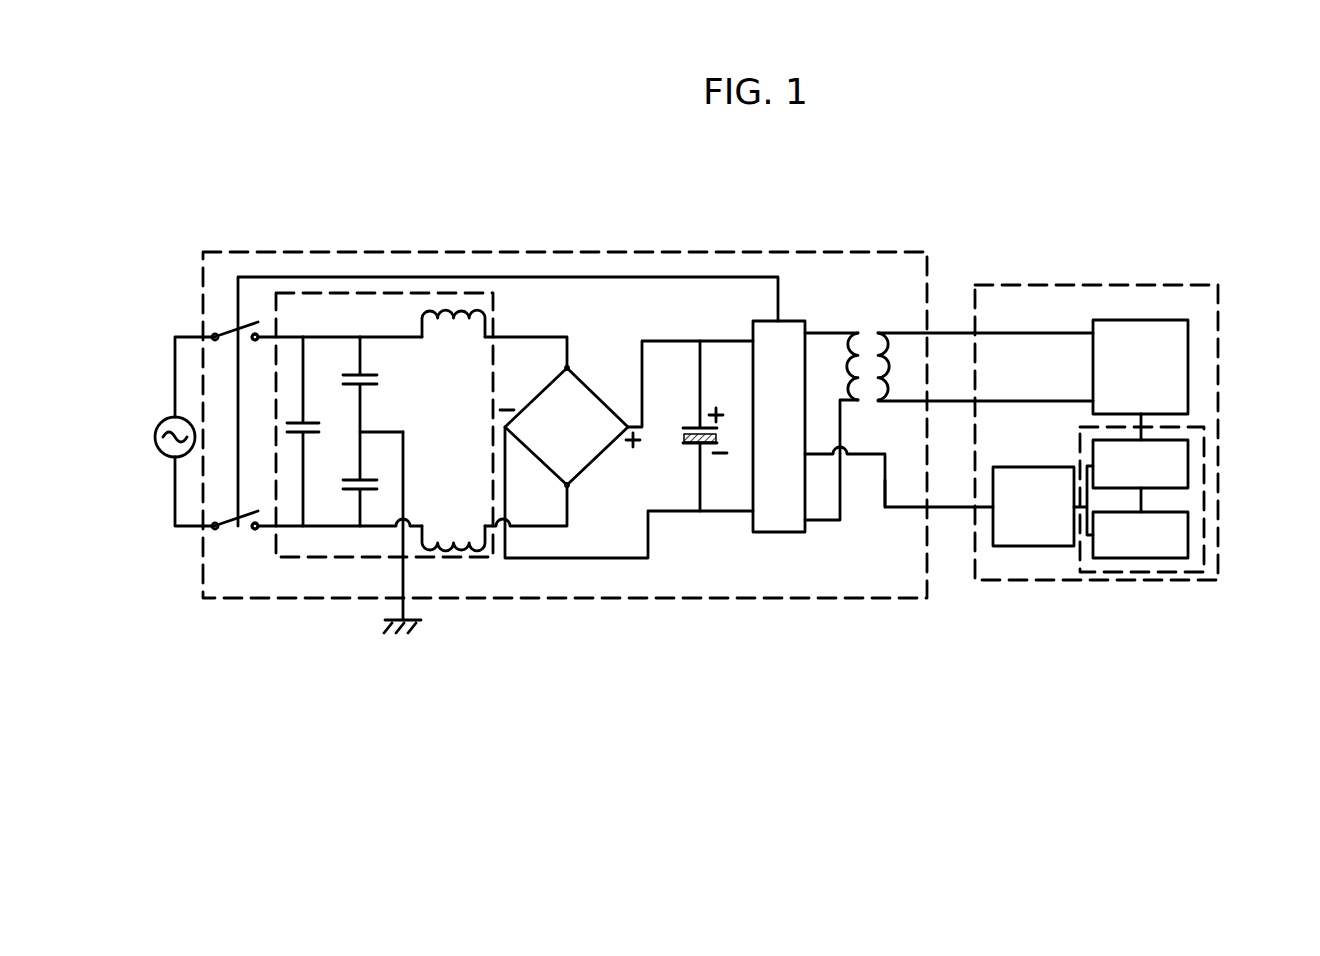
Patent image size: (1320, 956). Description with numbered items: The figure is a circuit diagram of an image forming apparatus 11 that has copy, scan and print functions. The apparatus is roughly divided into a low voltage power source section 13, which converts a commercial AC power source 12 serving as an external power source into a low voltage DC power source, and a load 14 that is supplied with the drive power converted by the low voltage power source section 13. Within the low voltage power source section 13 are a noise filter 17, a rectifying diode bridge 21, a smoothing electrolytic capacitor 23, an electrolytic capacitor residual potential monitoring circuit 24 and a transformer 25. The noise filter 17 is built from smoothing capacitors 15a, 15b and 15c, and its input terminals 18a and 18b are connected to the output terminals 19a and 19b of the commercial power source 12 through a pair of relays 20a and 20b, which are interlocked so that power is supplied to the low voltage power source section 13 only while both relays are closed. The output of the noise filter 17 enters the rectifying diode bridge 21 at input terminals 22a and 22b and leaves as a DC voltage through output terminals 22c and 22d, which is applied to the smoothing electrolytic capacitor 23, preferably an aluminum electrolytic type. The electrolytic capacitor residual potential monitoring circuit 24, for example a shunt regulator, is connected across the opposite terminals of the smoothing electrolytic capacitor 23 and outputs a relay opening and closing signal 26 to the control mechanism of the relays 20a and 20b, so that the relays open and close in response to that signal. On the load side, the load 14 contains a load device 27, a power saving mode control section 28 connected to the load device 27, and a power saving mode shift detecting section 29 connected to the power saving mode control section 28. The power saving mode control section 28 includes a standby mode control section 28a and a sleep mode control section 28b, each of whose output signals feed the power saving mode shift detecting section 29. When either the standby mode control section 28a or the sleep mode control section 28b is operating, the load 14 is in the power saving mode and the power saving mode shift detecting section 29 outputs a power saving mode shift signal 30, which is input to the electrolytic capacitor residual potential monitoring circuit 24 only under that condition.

The image forming apparatus 11 is at (809, 229).
The commercial AC power source 12 is at (166, 457).
The low voltage power source section 13 is at (891, 251).
The load 14 is at (1027, 285).
The smoothing capacitor 15a is at (312, 437).
The smoothing capacitor 15b is at (370, 379).
The smoothing capacitor 15c is at (370, 478).
The noise filter 17 is at (385, 292).
The input terminal 18a is at (260, 337).
The input terminal 18b is at (259, 529).
The output terminal 19a is at (213, 335).
The output terminal 19b is at (214, 528).
The relay 20a is at (221, 323).
The relay 20b is at (234, 518).
The rectifying diode bridge 21 is at (577, 373).
The input terminal 22a is at (563, 368).
The input terminal 22b is at (569, 487).
The output terminal 22c is at (503, 427).
The output terminal 22d is at (627, 424).
The smoothing electrolytic capacitor 23 is at (695, 445).
The electrolytic capacitor residual potential monitoring circuit 24 is at (783, 533).
The transformer 25 is at (870, 333).
The relay opening and closing signal 26 is at (590, 277).
The load device 27 is at (1188, 350).
The power saving mode control section 28 is at (1204, 428).
The standby mode control section 28a is at (1188, 468).
The sleep mode control section 28b is at (1188, 530).
The power saving mode shift detecting section 29 is at (1033, 547).
The power saving mode shift signal 30 is at (888, 507).